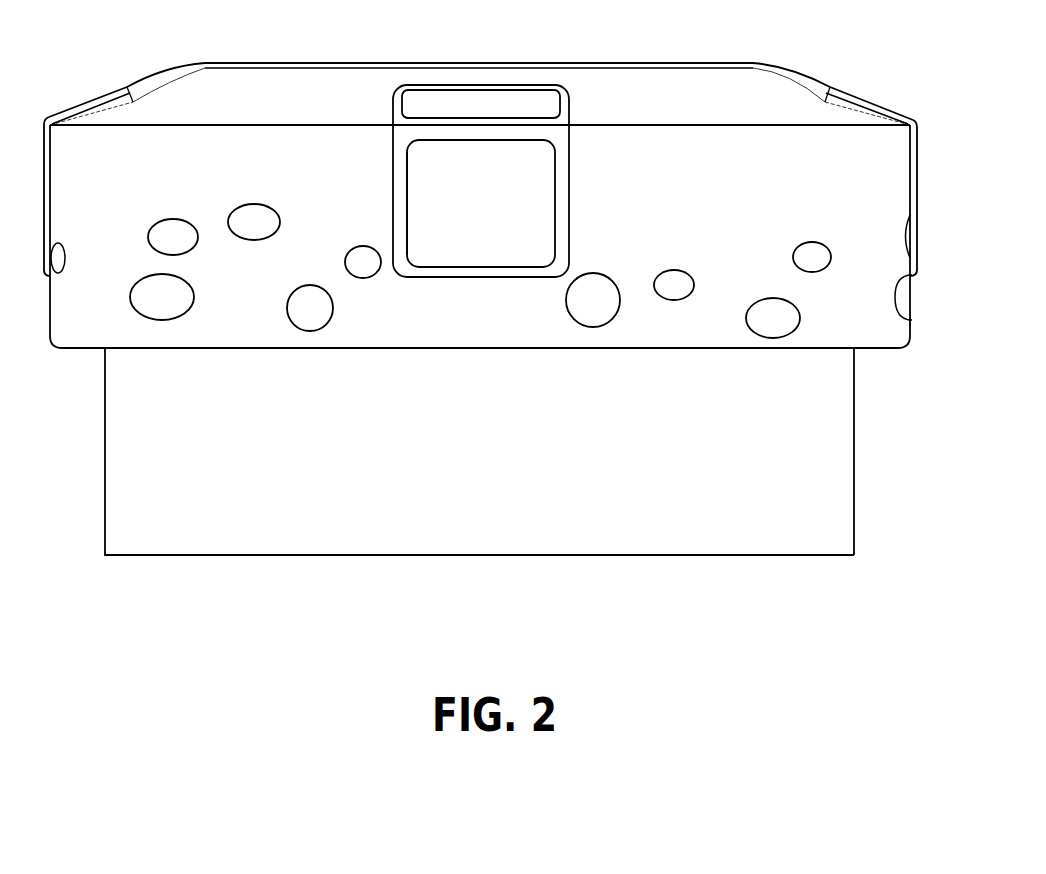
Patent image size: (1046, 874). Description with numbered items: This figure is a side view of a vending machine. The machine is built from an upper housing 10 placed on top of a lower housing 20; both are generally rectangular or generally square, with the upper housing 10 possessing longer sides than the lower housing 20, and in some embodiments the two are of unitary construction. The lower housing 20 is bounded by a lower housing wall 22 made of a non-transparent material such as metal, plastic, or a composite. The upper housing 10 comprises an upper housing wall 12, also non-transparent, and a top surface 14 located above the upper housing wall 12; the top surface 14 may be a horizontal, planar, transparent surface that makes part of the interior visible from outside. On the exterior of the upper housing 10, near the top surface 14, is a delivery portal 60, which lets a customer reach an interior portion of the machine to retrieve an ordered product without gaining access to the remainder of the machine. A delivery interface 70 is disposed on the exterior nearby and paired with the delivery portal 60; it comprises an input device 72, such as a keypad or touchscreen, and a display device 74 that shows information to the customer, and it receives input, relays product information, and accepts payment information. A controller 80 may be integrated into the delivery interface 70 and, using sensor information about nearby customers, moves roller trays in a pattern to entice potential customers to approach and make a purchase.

The upper housing 10 is at (906, 303).
The upper housing wall 12 is at (762, 63).
The top surface 14 is at (882, 167).
The lower housing 20 is at (625, 507).
The lower housing wall 22 is at (837, 477).
The delivery portal 60 is at (421, 100).
The delivery interface 70 is at (570, 187).
The input device 72 is at (540, 229).
The display device 74 is at (418, 163).
The controller 80 is at (313, 316).